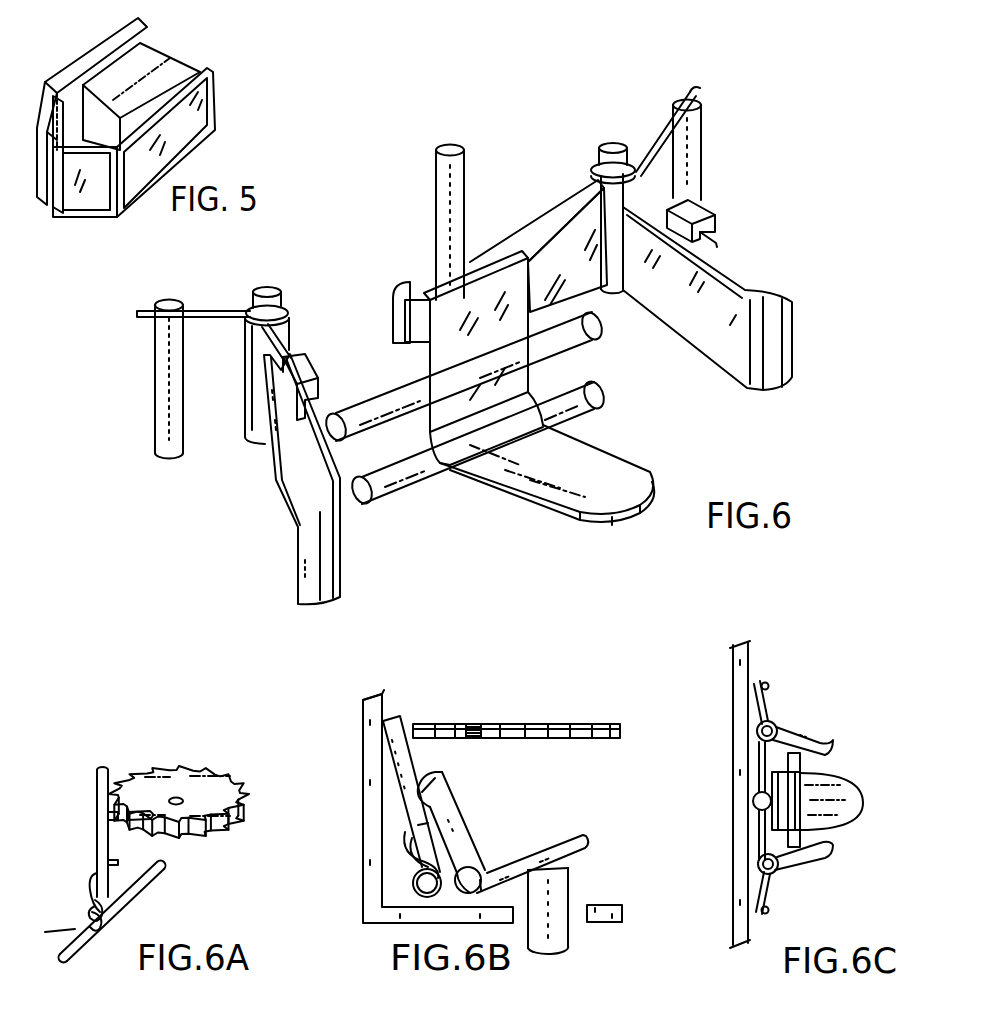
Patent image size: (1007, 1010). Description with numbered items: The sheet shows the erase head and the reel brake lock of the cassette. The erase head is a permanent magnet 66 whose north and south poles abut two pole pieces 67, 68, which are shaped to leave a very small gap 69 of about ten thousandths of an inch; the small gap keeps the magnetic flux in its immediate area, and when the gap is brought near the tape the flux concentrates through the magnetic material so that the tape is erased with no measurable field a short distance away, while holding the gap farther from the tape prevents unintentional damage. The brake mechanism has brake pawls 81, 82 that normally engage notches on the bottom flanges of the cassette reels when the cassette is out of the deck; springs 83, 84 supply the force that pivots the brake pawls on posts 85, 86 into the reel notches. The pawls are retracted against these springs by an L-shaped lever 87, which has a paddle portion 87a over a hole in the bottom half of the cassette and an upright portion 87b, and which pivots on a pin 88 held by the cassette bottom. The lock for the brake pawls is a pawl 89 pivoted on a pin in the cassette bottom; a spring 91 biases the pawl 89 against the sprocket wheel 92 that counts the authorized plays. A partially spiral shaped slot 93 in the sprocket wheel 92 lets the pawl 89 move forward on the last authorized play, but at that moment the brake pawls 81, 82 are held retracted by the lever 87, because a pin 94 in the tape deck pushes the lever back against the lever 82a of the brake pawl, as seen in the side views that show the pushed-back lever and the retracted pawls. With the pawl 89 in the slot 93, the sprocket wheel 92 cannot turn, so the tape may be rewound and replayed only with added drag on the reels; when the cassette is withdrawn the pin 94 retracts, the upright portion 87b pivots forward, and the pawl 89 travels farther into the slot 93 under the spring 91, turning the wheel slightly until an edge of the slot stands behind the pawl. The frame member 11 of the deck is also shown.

In FIG. 6B, the wall / frame member 11 is at (364, 823).
In FIG. 5, the permanent magnet 66 is at (158, 58).
In FIG. 5, the pole piece 67 is at (118, 35).
In FIG. 5, the pole piece 68 is at (210, 110).
In FIG. 5, the gap 69 is at (53, 208).
In FIG. 6, the brake pawl 81 is at (283, 473).
In FIG. 6C, the brake pawl 81 is at (825, 855).
In FIG. 6, the brake pawl 82 is at (732, 268).
In FIG. 6C, the brake pawl 82 is at (812, 740).
In FIG. 6, the lever of brake pawl 82a is at (518, 238).
In FIG. 6, the spring 83 is at (210, 312).
In FIG. 6C, the spring 83 is at (770, 888).
In FIG. 6, the spring 84 is at (652, 152).
In FIG. 6C, the spring 84 is at (765, 708).
In FIG. 6, the post 85 is at (268, 290).
In FIG. 6, the post 86 is at (613, 147).
In FIG. 6, the L-shaped lever 87 is at (508, 403).
In FIG. 6, the paddle portion 87a is at (605, 497).
In FIG. 6B, the paddle portion 87a is at (549, 846).
In FIG. 6C, the paddle portion 87a is at (830, 785).
In FIG. 6, the upright portion 87b is at (430, 351).
In FIG. 6B, the upright portion 87b is at (449, 815).
In FIG. 6, the pin 88 is at (590, 397).
In FIG. 6, the pawl 89 is at (436, 199).
In FIG. 6A, the pawl 89 is at (97, 818).
In FIG. 6B, the pawl 89 is at (407, 758).
In FIG. 6C, the pawl 89 is at (753, 800).
In FIG. 6A, the spring 91 is at (97, 875).
In FIG. 6B, the spring 91 is at (412, 858).
In FIG. 6A, the sprocket wheel 92 is at (194, 770).
In FIG. 6B, the sprocket wheel 92 is at (547, 723).
In FIG. 6A, the partially spiral shaped slot 93 is at (122, 810).
In FIG. 6B, the partially spiral shaped slot 93 is at (475, 740).
In FIG. 6B, the pin 94 is at (560, 882).